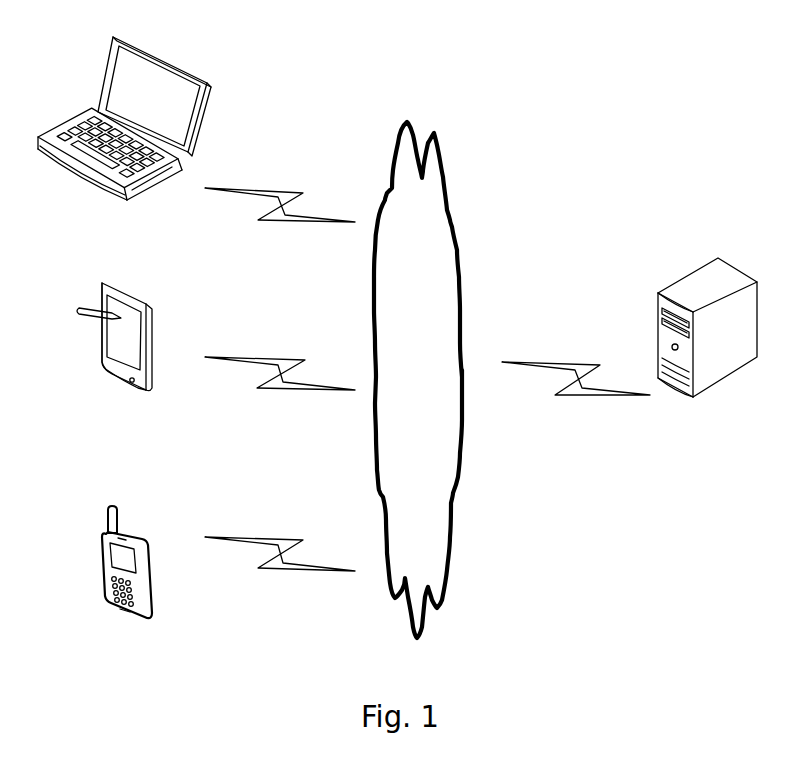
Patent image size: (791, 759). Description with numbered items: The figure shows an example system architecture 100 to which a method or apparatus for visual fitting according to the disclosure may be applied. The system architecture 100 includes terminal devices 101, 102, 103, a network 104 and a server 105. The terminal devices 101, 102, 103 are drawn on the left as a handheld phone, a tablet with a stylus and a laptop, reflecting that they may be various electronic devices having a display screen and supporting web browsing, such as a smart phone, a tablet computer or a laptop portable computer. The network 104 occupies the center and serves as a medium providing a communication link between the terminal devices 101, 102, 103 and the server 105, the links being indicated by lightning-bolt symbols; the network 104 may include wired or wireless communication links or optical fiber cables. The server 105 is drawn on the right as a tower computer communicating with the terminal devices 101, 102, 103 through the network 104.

The system architecture 100 is at (636, 26).
The terminal device 101 is at (127, 581).
The terminal device 102 is at (114, 356).
The terminal device 103 is at (124, 138).
The network 104 is at (418, 380).
The server 105 is at (707, 361).